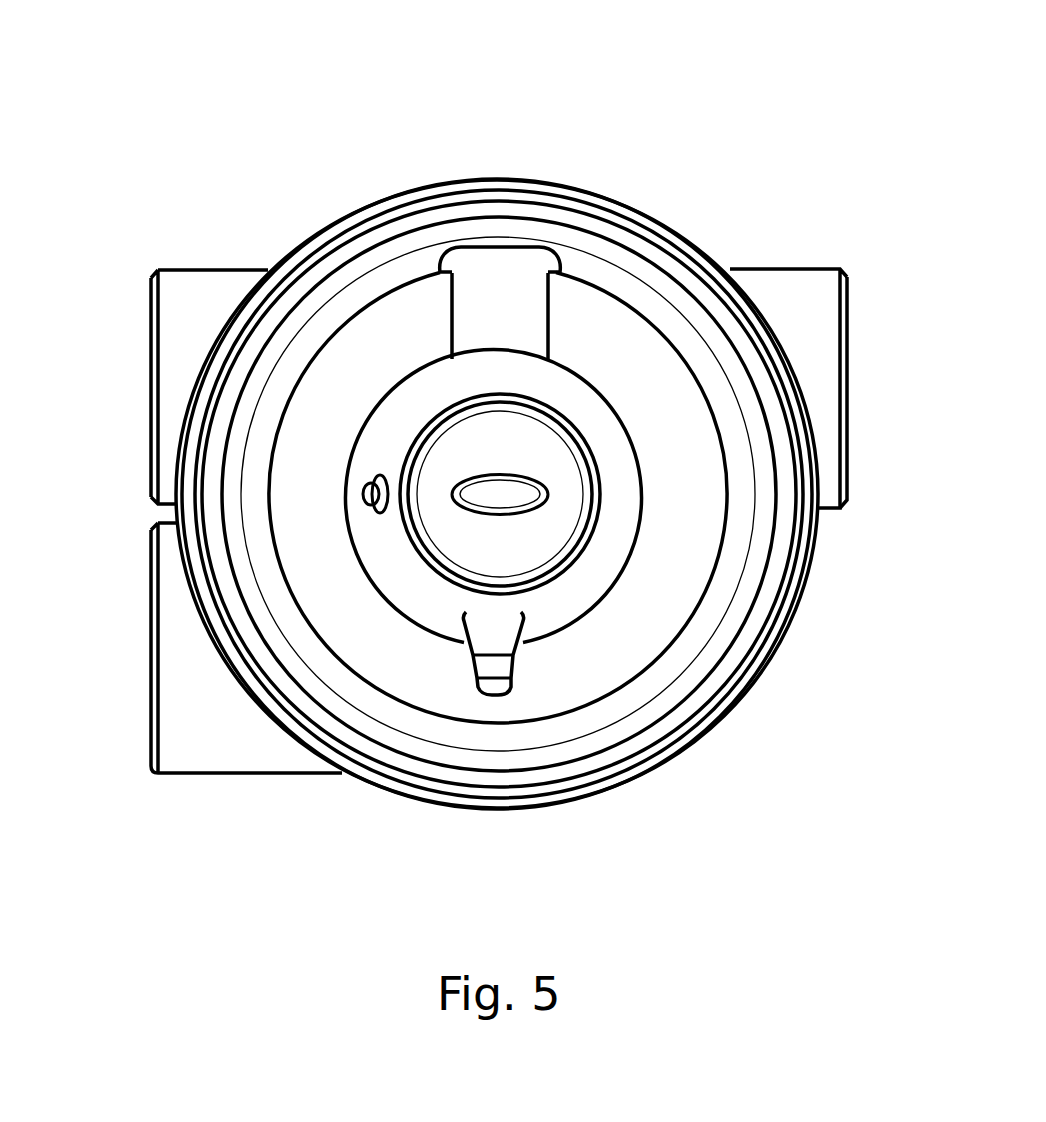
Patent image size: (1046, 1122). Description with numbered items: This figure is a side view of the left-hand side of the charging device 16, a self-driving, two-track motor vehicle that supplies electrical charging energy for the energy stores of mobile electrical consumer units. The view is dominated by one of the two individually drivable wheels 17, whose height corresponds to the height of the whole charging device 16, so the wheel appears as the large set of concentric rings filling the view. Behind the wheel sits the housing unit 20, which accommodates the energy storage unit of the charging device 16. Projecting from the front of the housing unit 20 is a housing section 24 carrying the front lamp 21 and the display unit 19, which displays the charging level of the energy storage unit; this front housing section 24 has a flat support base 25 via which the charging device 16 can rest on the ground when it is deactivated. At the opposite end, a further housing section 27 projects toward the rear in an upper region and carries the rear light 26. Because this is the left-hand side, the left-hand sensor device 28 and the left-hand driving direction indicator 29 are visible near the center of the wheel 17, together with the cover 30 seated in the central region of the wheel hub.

The charging device 16 is at (660, 116).
The wheels 17 is at (503, 180).
The display unit 19 is at (151, 330).
The housing unit 20 is at (156, 328).
The front lamp 21 is at (158, 667).
The housing section 24 is at (194, 716).
The flat support base 25 is at (227, 773).
The rear light 26 is at (848, 297).
The housing section 27 is at (845, 338).
The left-hand sensor device 28 is at (414, 692).
The left-hand driving direction indicator 29 is at (503, 760).
The cover 30 is at (543, 651).